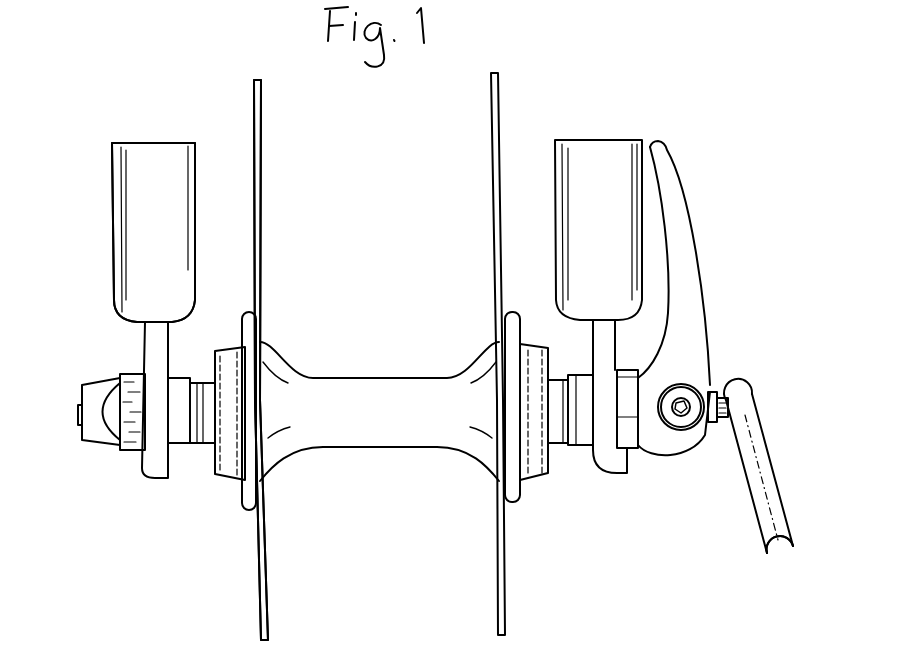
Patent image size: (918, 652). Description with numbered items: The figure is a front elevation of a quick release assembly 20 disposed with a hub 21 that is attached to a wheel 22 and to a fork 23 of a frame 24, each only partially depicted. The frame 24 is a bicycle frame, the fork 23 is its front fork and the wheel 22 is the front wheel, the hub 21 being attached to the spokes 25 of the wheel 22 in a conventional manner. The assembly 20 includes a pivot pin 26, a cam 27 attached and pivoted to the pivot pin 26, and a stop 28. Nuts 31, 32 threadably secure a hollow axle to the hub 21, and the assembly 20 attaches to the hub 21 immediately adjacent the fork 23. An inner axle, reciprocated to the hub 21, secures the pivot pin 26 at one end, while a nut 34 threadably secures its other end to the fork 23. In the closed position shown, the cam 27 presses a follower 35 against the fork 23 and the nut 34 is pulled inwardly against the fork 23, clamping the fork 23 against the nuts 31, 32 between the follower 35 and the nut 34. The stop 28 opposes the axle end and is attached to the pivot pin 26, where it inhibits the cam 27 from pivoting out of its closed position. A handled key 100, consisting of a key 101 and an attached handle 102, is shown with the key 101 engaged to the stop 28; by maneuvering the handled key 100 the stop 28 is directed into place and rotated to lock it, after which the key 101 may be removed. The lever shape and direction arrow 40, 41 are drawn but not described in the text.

The quick release assembly 20 is at (743, 375).
The hub 21 is at (360, 387).
The wheel 22 is at (337, 200).
The fork 23 is at (640, 70).
The frame 24 is at (67, 292).
The spokes 25 is at (548, 55).
The pivot pin 26 is at (666, 390).
The cam 27 is at (673, 450).
The stop 28 is at (737, 320).
The nut 31 is at (583, 437).
The nut 32 is at (188, 447).
The nut 34 is at (108, 440).
The follower 35 is at (637, 450).
The cam lever 40 is at (675, 202).
The lever movement direction 41 is at (752, 192).
The handled key 100 is at (812, 450).
The key 101 is at (808, 340).
The handle 102 is at (760, 597).